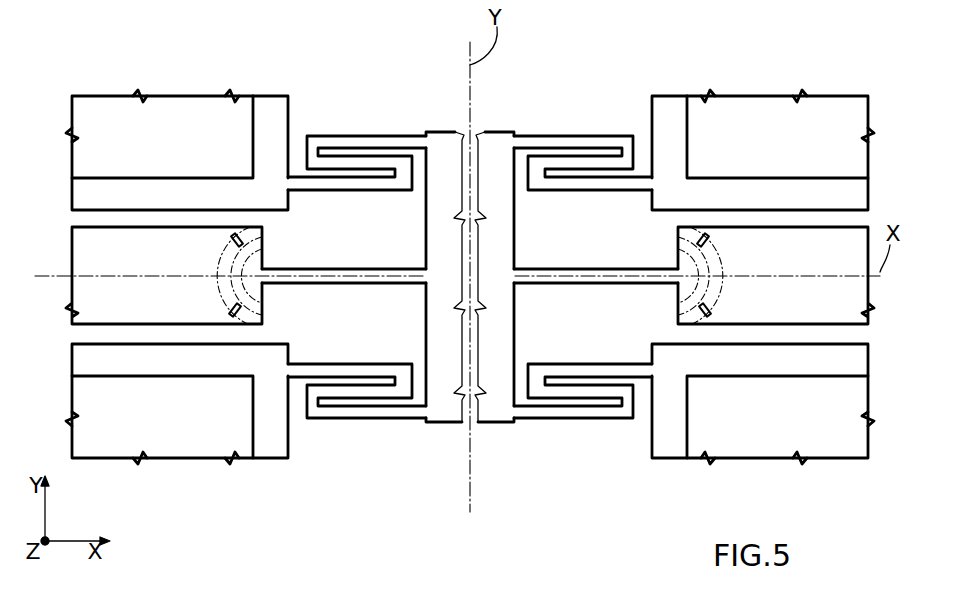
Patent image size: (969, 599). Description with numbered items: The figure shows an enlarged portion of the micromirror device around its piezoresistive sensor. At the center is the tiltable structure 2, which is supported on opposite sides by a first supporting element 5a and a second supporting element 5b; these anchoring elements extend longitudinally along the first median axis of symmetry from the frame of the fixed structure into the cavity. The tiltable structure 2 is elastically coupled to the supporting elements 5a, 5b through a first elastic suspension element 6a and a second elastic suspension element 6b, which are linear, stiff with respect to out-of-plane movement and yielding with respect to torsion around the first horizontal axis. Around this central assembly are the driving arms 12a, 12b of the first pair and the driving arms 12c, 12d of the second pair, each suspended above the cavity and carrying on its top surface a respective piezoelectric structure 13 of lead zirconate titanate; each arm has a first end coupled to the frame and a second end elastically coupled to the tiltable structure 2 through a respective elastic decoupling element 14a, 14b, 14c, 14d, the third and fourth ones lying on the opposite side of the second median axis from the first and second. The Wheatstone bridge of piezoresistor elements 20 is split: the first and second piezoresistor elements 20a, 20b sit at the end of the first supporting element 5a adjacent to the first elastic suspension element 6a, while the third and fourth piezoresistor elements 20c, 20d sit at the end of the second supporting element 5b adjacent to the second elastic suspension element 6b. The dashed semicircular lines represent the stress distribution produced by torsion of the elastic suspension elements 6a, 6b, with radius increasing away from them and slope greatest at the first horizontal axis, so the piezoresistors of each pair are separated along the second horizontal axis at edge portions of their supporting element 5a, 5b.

The tiltable structure 2 is at (490, 142).
The first supporting element 5a is at (88, 248).
The second supporting element 5b is at (872, 218).
The first elastic suspension element 6a is at (362, 283).
The second elastic suspension element 6b is at (572, 275).
The driving arm 12a is at (265, 112).
The driving arm 12b is at (262, 445).
The driving arm 12c is at (672, 112).
The driving arm 12d is at (672, 445).
The piezoelectric structure 13 is at (107, 112).
The first elastic decoupling element 14a is at (353, 142).
The second elastic decoupling element 14b is at (355, 410).
The third elastic decoupling element 14c is at (587, 142).
The fourth elastic decoupling element 14d is at (545, 410).
The piezoresistor elements 20 is at (213, 285).
The first piezoresistor element 20a is at (229, 224).
The second piezoresistor element 20b is at (231, 322).
The third piezoresistor element 20c is at (707, 322).
The fourth piezoresistor element 20d is at (710, 224).